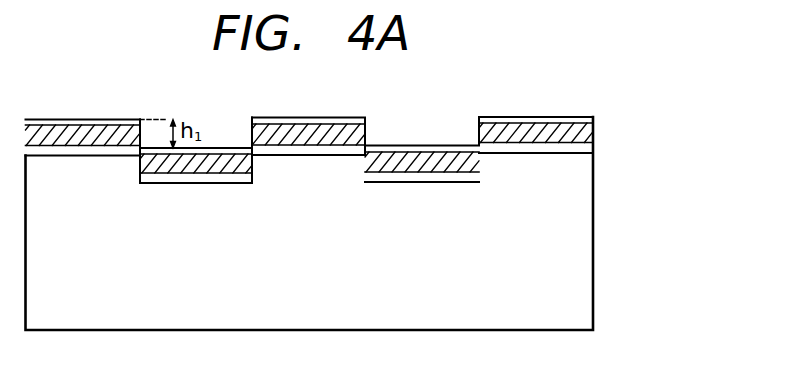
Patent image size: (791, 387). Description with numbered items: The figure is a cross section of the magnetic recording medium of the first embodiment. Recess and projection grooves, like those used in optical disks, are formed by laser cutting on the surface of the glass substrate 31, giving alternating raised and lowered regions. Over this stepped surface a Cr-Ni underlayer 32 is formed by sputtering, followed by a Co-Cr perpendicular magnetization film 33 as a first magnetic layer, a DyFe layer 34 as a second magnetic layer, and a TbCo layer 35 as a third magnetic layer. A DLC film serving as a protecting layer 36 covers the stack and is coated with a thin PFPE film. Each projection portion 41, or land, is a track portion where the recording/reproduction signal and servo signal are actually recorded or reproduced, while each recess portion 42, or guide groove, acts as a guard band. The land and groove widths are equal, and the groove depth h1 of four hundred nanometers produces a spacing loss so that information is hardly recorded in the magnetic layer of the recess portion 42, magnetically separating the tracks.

The glass substrate 31 is at (586, 277).
The underlayer 32 is at (595, 149).
The perpendicular magnetization film 33 is at (375, 148).
The DyFe layer 34 is at (375, 148).
The TbCo layer 35 is at (595, 131).
The protecting layer 36 is at (595, 116).
The projection portion 41 is at (275, 118).
The recess portion 42 is at (415, 145).